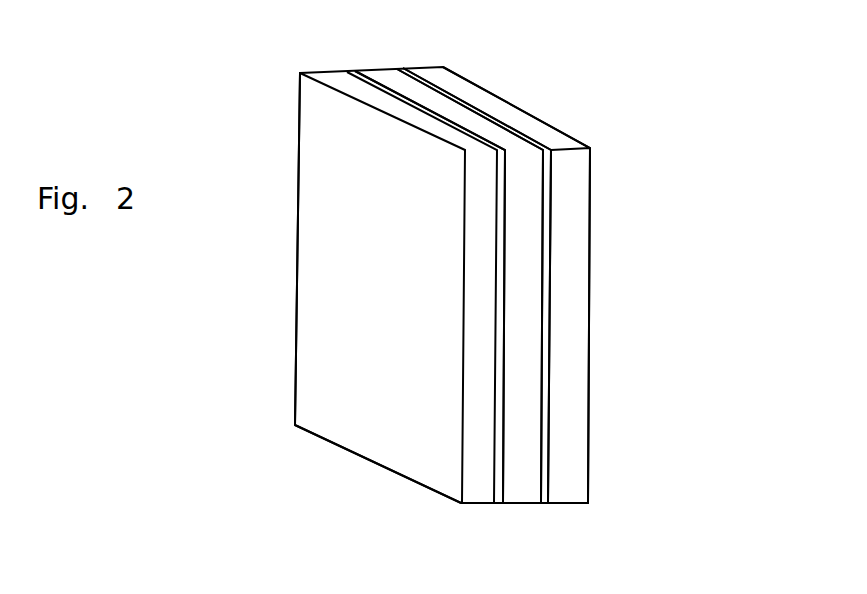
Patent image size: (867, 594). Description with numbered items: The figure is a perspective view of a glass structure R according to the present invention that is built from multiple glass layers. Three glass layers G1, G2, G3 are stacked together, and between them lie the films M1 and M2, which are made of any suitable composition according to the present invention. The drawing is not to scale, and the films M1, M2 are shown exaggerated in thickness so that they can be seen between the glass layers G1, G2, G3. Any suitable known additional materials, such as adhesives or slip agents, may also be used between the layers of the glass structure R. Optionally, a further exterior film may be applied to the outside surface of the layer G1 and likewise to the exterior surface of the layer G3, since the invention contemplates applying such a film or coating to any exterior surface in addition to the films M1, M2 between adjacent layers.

The glass structure R is at (270, 150).
The glass layer G1 is at (298, 273).
The glass layer G2 is at (460, 118).
The glass layer G3 is at (589, 163).
The film M1 is at (498, 243).
The film M2 is at (548, 229).